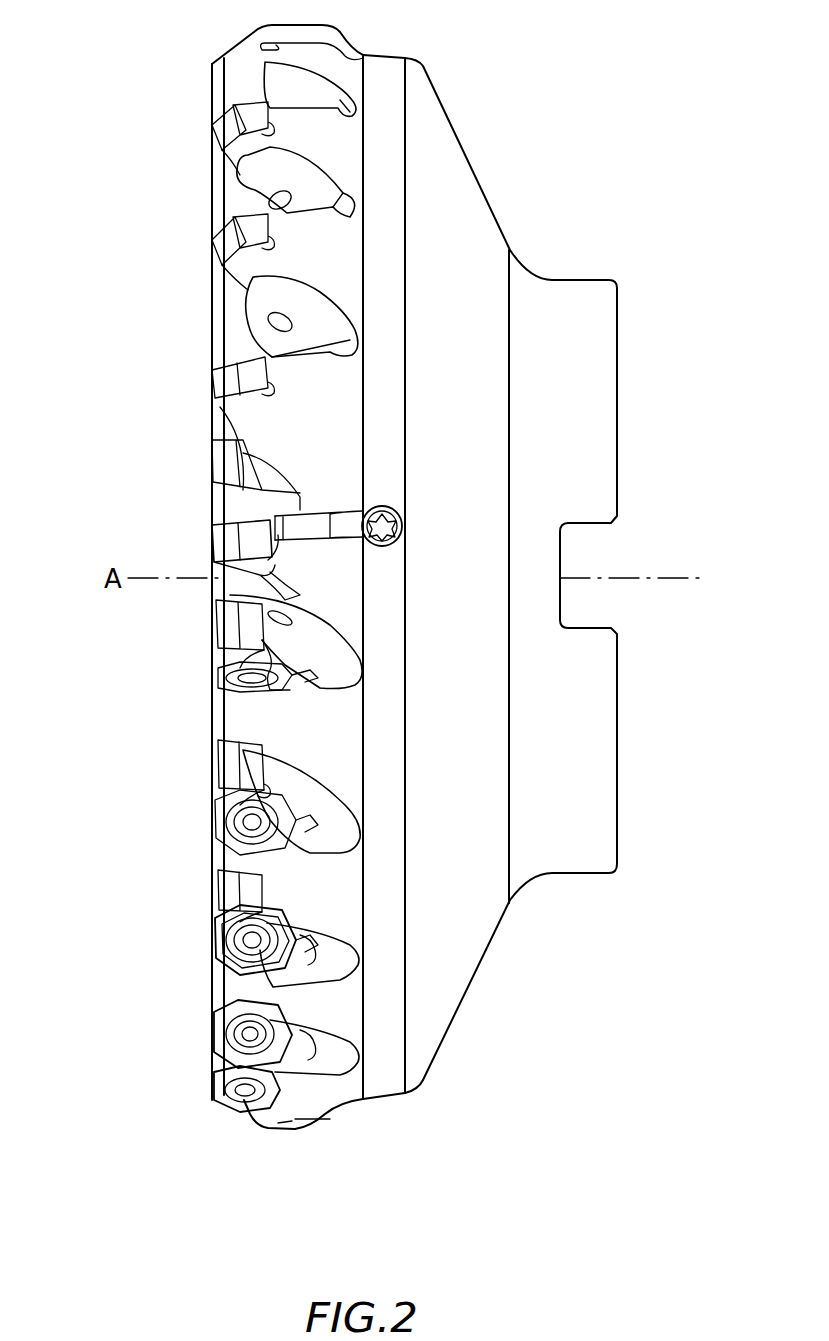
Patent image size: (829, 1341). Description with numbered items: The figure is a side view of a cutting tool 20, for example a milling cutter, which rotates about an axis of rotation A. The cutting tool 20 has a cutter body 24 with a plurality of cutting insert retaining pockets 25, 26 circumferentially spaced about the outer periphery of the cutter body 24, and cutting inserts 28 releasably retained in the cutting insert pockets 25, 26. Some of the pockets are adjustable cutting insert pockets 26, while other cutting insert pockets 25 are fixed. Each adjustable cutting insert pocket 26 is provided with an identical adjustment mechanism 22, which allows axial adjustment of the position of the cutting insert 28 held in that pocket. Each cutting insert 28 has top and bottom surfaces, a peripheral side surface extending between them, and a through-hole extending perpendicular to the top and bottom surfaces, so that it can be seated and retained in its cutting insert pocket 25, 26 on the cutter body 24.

The cutting tool 20 is at (155, 81).
The adjustment mechanism 22 is at (255, 535).
The cutter body 24 is at (440, 137).
The fixed cutting insert pocket 25 is at (258, 1110).
The adjustable cutting insert pocket 26 is at (268, 562).
The cutting insert 28 is at (213, 940).